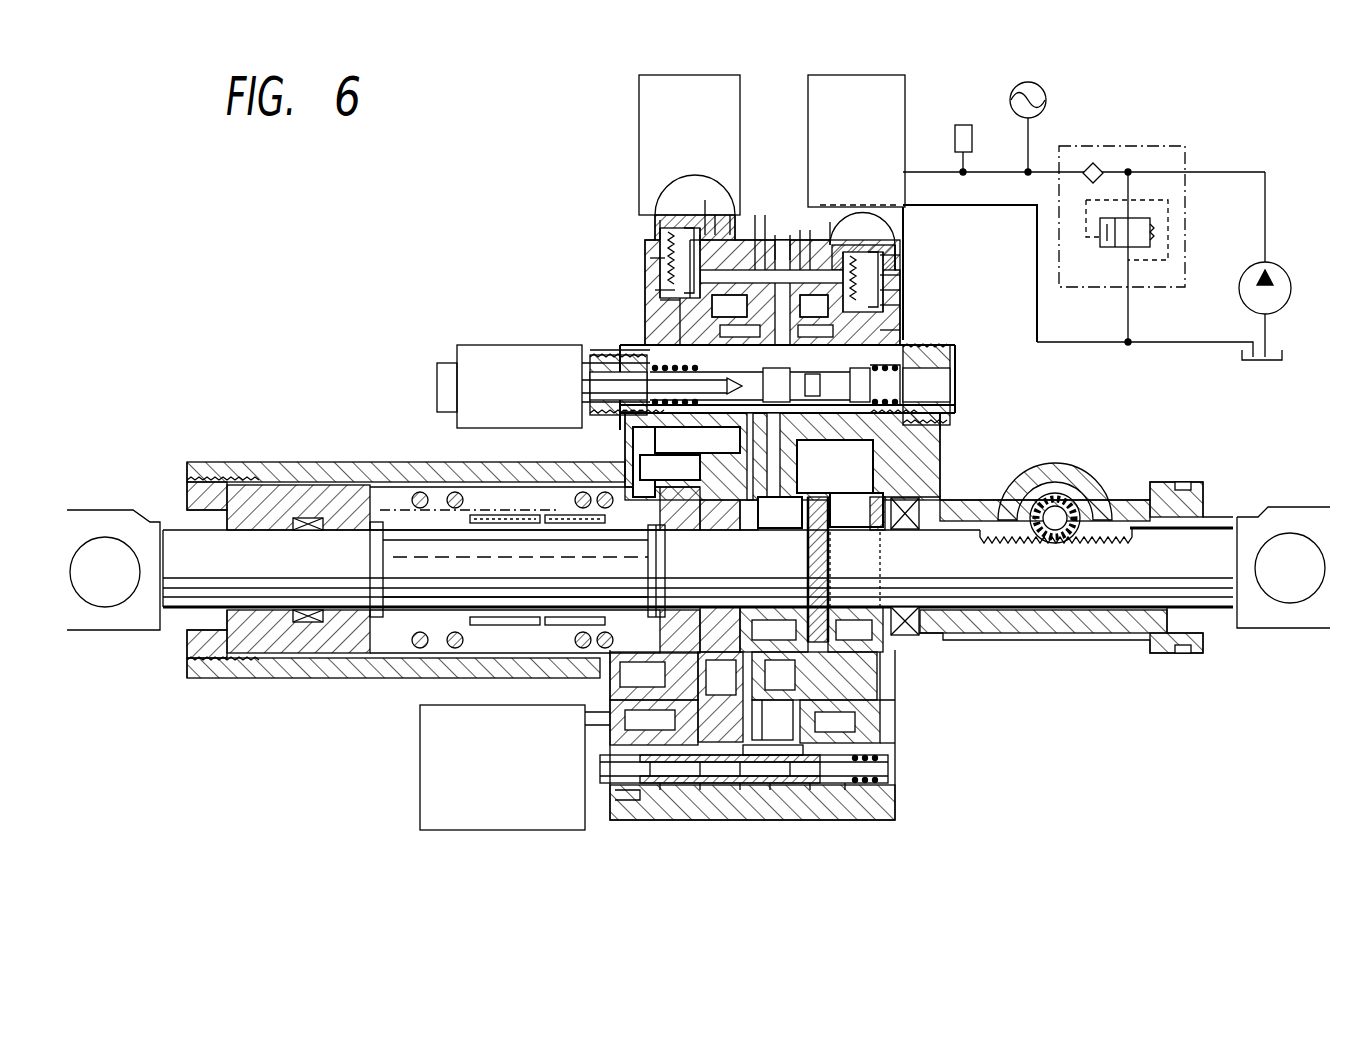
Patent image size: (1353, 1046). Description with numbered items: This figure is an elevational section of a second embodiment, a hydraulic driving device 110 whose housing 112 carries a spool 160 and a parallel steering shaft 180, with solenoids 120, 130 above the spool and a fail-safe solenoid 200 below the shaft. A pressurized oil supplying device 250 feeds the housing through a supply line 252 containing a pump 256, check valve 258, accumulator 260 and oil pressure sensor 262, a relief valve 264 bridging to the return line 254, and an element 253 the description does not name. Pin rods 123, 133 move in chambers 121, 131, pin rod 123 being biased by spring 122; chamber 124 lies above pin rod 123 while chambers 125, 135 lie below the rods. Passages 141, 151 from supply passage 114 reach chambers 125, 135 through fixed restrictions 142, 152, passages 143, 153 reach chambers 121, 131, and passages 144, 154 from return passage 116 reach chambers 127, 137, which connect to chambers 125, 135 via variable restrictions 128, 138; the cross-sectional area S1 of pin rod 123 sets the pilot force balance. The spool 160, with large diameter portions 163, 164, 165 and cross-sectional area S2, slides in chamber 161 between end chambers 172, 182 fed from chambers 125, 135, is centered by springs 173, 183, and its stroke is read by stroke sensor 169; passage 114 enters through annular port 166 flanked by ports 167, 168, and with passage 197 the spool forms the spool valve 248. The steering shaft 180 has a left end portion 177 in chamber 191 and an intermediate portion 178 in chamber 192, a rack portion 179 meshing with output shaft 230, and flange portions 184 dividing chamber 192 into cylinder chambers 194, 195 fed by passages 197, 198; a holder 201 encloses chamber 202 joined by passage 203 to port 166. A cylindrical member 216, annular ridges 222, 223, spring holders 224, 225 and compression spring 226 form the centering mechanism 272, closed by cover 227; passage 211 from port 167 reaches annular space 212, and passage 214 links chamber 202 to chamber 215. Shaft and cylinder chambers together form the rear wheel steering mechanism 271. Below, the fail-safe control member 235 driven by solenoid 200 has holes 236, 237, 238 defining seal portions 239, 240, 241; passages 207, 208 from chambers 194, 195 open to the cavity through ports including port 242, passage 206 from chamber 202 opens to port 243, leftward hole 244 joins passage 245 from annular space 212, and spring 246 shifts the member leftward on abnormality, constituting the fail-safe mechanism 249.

The hydraulic driving device 110 is at (480, 236).
The housing 112 is at (955, 497).
The passage 114 is at (775, 235).
The passage 116 is at (790, 235).
The solenoid 120 is at (640, 140).
The chamber 121 is at (660, 220).
The spring 122 is at (700, 240).
The pin rod 123 is at (650, 260).
The chamber 124 is at (700, 235).
The chamber 125 is at (600, 360).
The chamber 127 is at (660, 290).
The variable restriction 128 is at (665, 300).
The solenoid 130 is at (905, 90).
The chamber 131 is at (830, 220).
The pin rod 133 is at (870, 215).
The chamber 135 is at (900, 305).
The chamber 137 is at (905, 290).
The variable restriction 138 is at (900, 275).
The passage 141 is at (745, 210).
The fixed restriction 142 is at (640, 345).
The passage 143 is at (730, 205).
The passage 144 is at (715, 130).
The passage 151 is at (905, 330).
The fixed restriction 152 is at (905, 260).
The passage 153 is at (860, 189).
The passage 154 is at (900, 250).
The spool 160 is at (788, 456).
The chamber 161 is at (945, 385).
The large diameter portion 163 is at (686, 462).
The large diameter portion 164 is at (856, 513).
The large diameter portion 165 is at (915, 430).
The annular port 166 is at (655, 360).
The port 167 is at (640, 370).
The port 168 is at (928, 360).
The stroke sensor 169 is at (455, 345).
The chamber 172 is at (580, 390).
The spring 173 is at (570, 372).
The left end portion 177 is at (515, 575).
The intermediate portion 178 is at (880, 586).
The rack portion 179 is at (1128, 540).
The steering shaft 180 is at (900, 680).
The chamber 182 is at (955, 405).
The spring 183 is at (945, 413).
The flange portions 184 is at (814, 676).
The chamber 191 is at (525, 640).
The chamber 192 is at (885, 522).
The cylinder chamber 194 is at (800, 639).
The cylinder chamber 195 is at (874, 639).
The passage 197 is at (806, 525).
The passage 198 is at (835, 467).
The solenoid 200 is at (420, 810).
The holder 201 is at (740, 532).
The chamber 202 is at (715, 522).
The passage 203 is at (850, 530).
The passage 206 is at (720, 697).
The passage 207 is at (774, 693).
The passage 208 is at (895, 745).
The passage 211 is at (555, 500).
The annular space 212 is at (520, 495).
The passage 214 is at (545, 560).
The chamber 215 is at (300, 640).
The cylindrical member 216 is at (410, 487).
The annular ridge 222 is at (338, 632).
The annular ridge 223 is at (668, 600).
The spring holder 224 is at (283, 510).
The spring holder 225 is at (452, 495).
The compression spring 226 is at (360, 490).
The cover 227 is at (230, 485).
The output shaft 230 is at (1065, 505).
The fail-safe control member 235 is at (810, 785).
The hole 236 is at (740, 785).
The hole 237 is at (770, 785).
The hole 238 is at (890, 778).
The seal portion 239 is at (675, 790).
The seal portion 240 is at (760, 790).
The seal portion 241 is at (760, 745).
The port 242 is at (855, 745).
The port 243 is at (710, 785).
The leftward hole 244 is at (625, 805).
The passage 245 is at (600, 720).
The spring 246 is at (890, 762).
The spool valve 248 is at (780, 515).
The fail-safe mechanism 249 is at (850, 790).
The pressurized oil supplying device 250 is at (1203, 130).
The supply line 252 is at (1265, 205).
The reservoir 253 is at (1262, 368).
The return line 254 is at (1150, 345).
The pump 256 is at (1250, 275).
The check valve 258 is at (1100, 165).
The accumulator 260 is at (1046, 95).
The oil pressure sensor 262 is at (955, 130).
The relief valve 264 is at (1150, 225).
The rear wheel steering mechanism 271 is at (980, 628).
The centering mechanism 272 is at (480, 667).
The cross-sectional area of pin rod S1 is at (700, 350).
The cross-sectional area of spool S2 is at (700, 425).